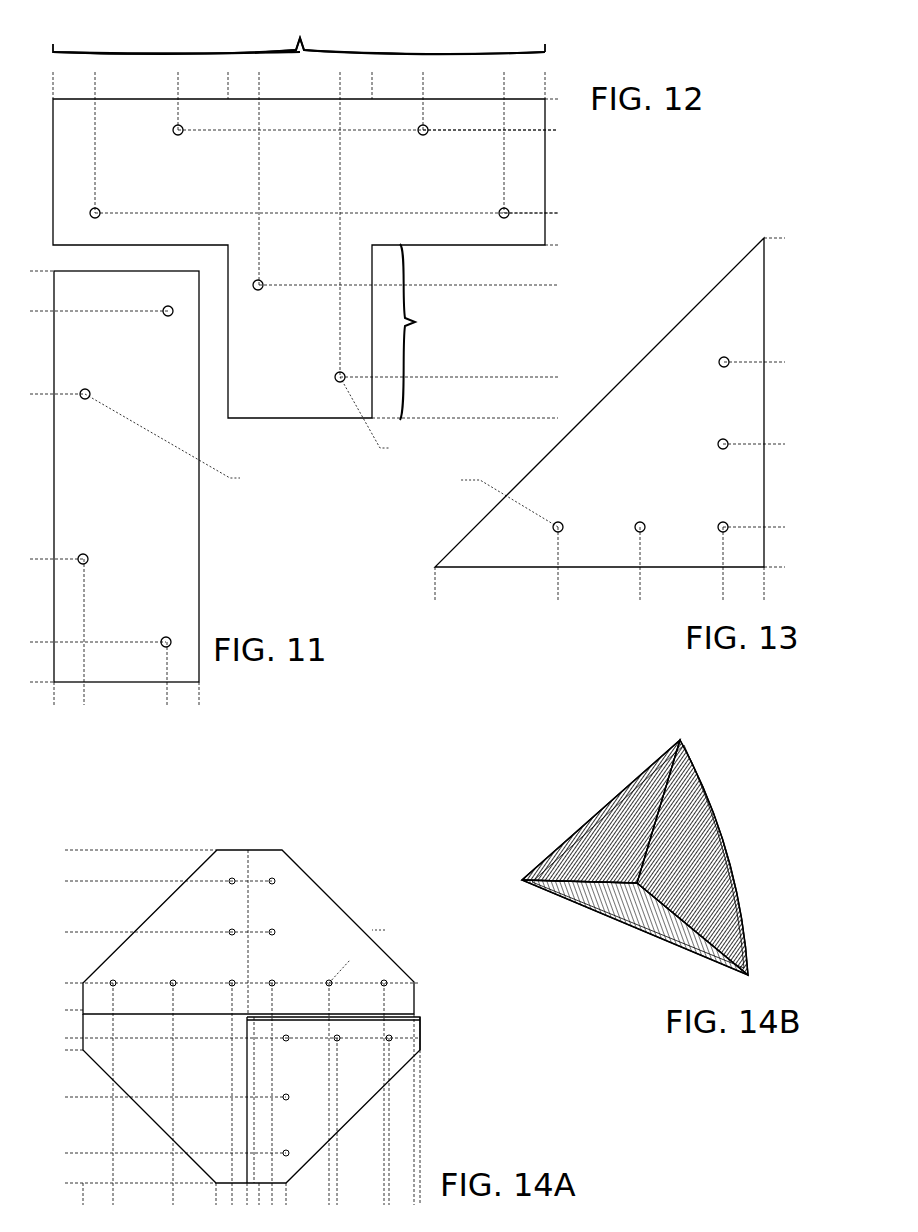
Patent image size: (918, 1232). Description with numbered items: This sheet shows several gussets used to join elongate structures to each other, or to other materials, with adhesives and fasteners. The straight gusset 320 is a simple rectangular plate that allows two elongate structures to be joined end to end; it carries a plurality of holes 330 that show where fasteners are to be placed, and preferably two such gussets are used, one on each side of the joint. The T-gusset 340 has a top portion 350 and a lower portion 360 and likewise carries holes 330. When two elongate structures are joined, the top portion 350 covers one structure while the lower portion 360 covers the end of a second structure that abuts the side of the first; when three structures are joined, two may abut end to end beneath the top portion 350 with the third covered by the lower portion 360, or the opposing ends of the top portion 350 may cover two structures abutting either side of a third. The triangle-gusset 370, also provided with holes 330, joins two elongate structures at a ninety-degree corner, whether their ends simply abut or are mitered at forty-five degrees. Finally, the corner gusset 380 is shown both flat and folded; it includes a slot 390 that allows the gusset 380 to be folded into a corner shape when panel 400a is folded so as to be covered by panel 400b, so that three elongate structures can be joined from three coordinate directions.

In FIG. 11, the straight gusset 320 is at (216, 514).
In FIG. 12, the holes 330 is at (174, 134).
In FIG. 11, the holes 330 is at (165, 314).
In FIG. 13, the holes 330 is at (720, 365).
In FIG. 14A, the holes 330 is at (230, 934).
In FIG. 12, the T-gusset 340 is at (592, 210).
In FIG. 12, the top portion 350 is at (299, 31).
In FIG. 12, the lower portion 360 is at (428, 332).
In FIG. 13, the triangle-gusset 370 is at (622, 338).
In FIG. 14A, the corner gusset 380 is at (314, 846).
In FIG. 14B, the corner gusset 380 is at (802, 814).
In FIG. 14A, the slot 390 is at (368, 1016).
In FIG. 14A, the panel 400a is at (318, 927).
In FIG. 14A, the panel 400b is at (360, 1078).